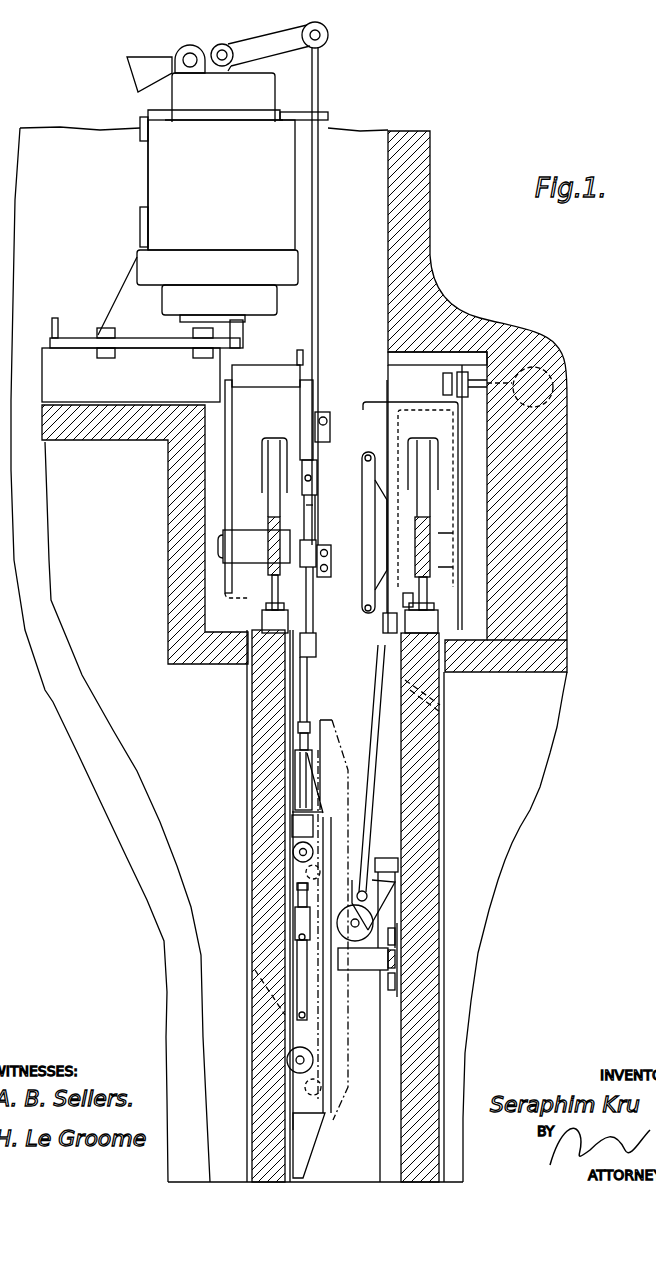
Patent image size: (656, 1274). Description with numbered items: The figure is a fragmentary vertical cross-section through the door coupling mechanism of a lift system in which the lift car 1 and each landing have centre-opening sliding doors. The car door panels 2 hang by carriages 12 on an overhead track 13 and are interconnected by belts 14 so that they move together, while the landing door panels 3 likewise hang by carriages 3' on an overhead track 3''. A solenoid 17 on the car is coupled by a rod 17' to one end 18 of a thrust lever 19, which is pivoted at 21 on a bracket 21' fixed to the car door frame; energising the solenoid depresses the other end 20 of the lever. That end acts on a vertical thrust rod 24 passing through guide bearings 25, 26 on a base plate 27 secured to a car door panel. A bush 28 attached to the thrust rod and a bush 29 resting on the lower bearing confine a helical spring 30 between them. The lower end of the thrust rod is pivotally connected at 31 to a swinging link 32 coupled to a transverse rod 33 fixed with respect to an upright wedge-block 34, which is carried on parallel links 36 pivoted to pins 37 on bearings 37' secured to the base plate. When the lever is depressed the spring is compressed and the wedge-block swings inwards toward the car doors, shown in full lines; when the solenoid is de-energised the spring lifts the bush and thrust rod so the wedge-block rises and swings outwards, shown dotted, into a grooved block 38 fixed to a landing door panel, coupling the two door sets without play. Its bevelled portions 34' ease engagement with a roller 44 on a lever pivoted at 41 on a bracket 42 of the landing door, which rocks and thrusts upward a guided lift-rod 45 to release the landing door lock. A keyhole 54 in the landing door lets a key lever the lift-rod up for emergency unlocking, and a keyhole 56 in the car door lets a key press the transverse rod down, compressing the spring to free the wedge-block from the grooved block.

The lift car 1 is at (180, 618).
The car door panels 2 is at (256, 796).
The landing door panels 3 is at (436, 907).
The carriages 3' is at (412, 497).
The overhead track 3'' is at (427, 572).
The carriages 12 is at (265, 447).
The overhead track 13 is at (268, 547).
The belts 14 is at (321, 415).
The solenoid 17 is at (213, 185).
The rod 17' is at (328, 296).
The end of thrust lever 18 is at (314, 477).
The thrust lever 19 is at (313, 515).
The end of thrust lever 20 is at (316, 534).
The pivot 21 is at (324, 509).
The bracket 21' is at (267, 363).
The vertical thrust rod 24 is at (314, 616).
The guide bearing 25 is at (316, 640).
The guide bearing 26 is at (294, 830).
The base plate 27 is at (306, 679).
The bush 28 is at (311, 721).
The bush 29 is at (297, 810).
The helical spring 30 is at (298, 741).
The pivotal connection 31 is at (298, 935).
The swinging link 32 is at (298, 960).
The transverse rod 33 is at (298, 1016).
The wedge-block 34 is at (349, 965).
The bevelled portions 34' is at (324, 949).
The parallel links 36 is at (318, 866).
The pins 37 is at (264, 962).
The bearings 37' is at (261, 957).
The grooved block 38 is at (378, 970).
The pivot 41 is at (365, 890).
The bracket 42 is at (380, 742).
The roller 44 is at (366, 937).
The lift-rod 45 is at (388, 622).
The keyhole 54 is at (446, 699).
The keyhole 56 is at (268, 975).